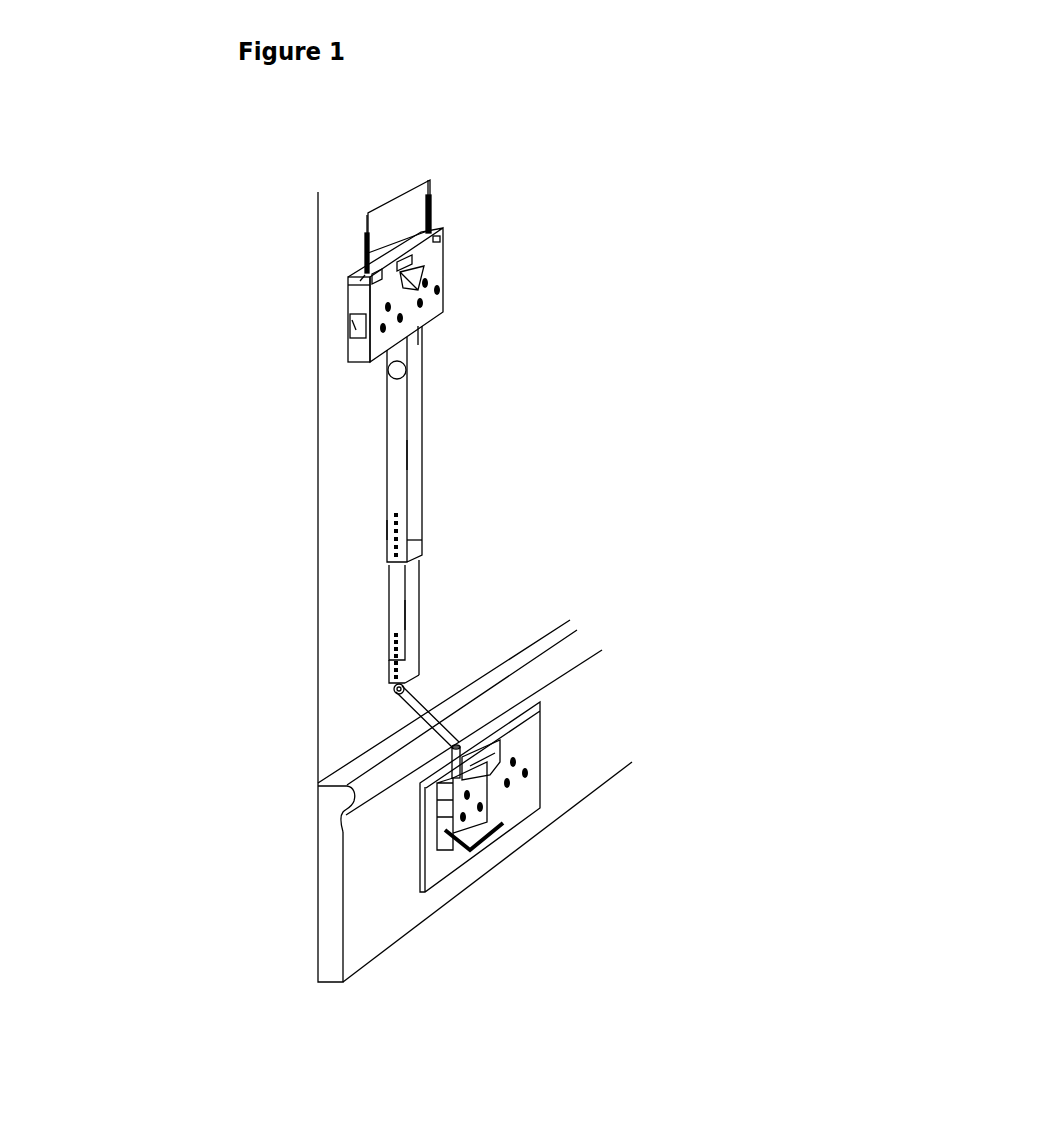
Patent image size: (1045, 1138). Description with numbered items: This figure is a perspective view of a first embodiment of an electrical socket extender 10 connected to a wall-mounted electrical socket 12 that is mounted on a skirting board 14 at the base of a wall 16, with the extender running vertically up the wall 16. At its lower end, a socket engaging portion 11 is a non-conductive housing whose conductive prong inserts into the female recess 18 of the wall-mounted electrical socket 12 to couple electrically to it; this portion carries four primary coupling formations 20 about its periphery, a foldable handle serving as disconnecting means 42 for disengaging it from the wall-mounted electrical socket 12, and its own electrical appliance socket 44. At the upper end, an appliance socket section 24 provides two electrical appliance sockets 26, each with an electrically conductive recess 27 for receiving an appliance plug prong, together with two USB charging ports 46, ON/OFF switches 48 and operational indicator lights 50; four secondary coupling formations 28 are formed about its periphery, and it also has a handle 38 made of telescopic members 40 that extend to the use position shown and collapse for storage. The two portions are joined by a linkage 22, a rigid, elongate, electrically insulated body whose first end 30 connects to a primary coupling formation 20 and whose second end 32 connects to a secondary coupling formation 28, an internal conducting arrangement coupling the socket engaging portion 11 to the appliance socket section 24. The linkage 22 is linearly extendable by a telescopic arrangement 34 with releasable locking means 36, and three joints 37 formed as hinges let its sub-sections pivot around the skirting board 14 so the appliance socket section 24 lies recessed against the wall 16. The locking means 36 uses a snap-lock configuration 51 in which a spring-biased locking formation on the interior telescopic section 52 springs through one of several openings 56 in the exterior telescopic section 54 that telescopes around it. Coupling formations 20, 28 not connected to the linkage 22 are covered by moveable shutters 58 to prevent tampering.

The electrical socket extender 10 is at (478, 526).
The socket engaging portion 11 is at (448, 797).
The wall-mounted electrical socket 12 is at (515, 720).
The skirting board 14 is at (358, 950).
The wall 16 is at (342, 631).
The female recess 18 is at (515, 755).
The primary coupling formations 20 is at (462, 810).
The linkage 22 is at (378, 460).
The appliance socket section 24 is at (353, 353).
The electrical appliance sockets 26 is at (445, 296).
The electrically conductive recess 27 is at (430, 284).
The secondary coupling formations 28 is at (395, 254).
The first end 30 is at (507, 782).
The second end 32 is at (420, 371).
The telescopic arrangement 34 is at (415, 453).
The releasable locking means 36 is at (370, 537).
The joints 37 is at (392, 690).
The handle 38 is at (369, 210).
The telescopic members 40 is at (366, 252).
The disconnecting means 42 is at (490, 826).
The electrical appliance socket 44 is at (468, 812).
The USB charging ports 46 is at (437, 256).
The ON/OFF switches 48 is at (348, 287).
The operational indicator lights 50 is at (450, 266).
The snap-lock configuration 51 is at (408, 512).
The interior telescopic section 52 is at (410, 643).
The exterior telescopic section 54 is at (420, 544).
The openings 56 is at (402, 528).
The moveable shutters 58 is at (387, 256).